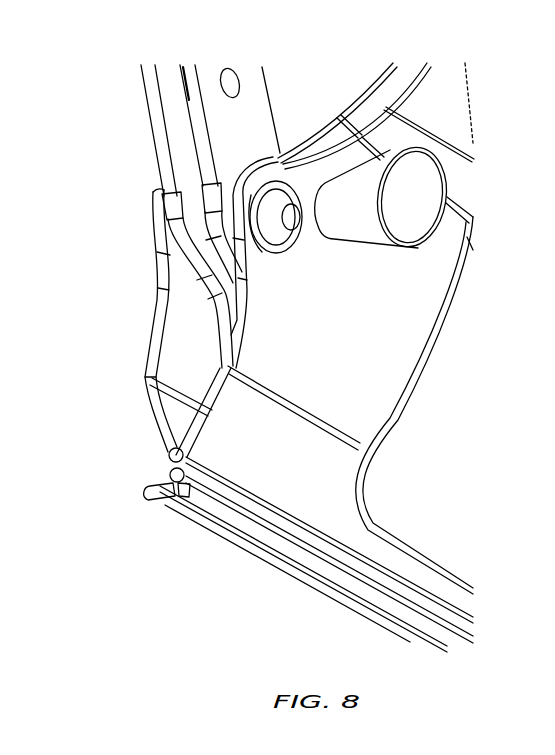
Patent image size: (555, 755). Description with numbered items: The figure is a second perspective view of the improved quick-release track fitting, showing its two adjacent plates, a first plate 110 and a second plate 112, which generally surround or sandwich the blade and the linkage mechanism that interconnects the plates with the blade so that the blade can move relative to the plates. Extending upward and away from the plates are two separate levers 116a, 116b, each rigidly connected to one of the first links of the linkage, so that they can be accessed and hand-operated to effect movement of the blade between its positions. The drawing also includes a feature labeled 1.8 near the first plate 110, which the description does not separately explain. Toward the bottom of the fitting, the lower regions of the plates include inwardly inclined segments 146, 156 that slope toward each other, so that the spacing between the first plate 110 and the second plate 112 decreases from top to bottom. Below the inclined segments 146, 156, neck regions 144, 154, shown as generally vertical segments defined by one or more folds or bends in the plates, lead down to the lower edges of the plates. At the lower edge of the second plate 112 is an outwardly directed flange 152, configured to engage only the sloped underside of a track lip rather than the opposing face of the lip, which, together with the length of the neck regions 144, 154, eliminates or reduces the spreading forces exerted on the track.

The lever 116a is at (215, 103).
The lever 116b is at (172, 88).
The second plate 112 is at (377, 107).
The first plate 110 is at (430, 110).
The opening 1.8 is at (428, 217).
The inwardly inclined segment 146 is at (200, 417).
The neck region 144 is at (180, 466).
The inwardly inclined segment 156 is at (157, 407).
The neck region 154 is at (165, 470).
The outwardly directed flange 152 is at (150, 492).